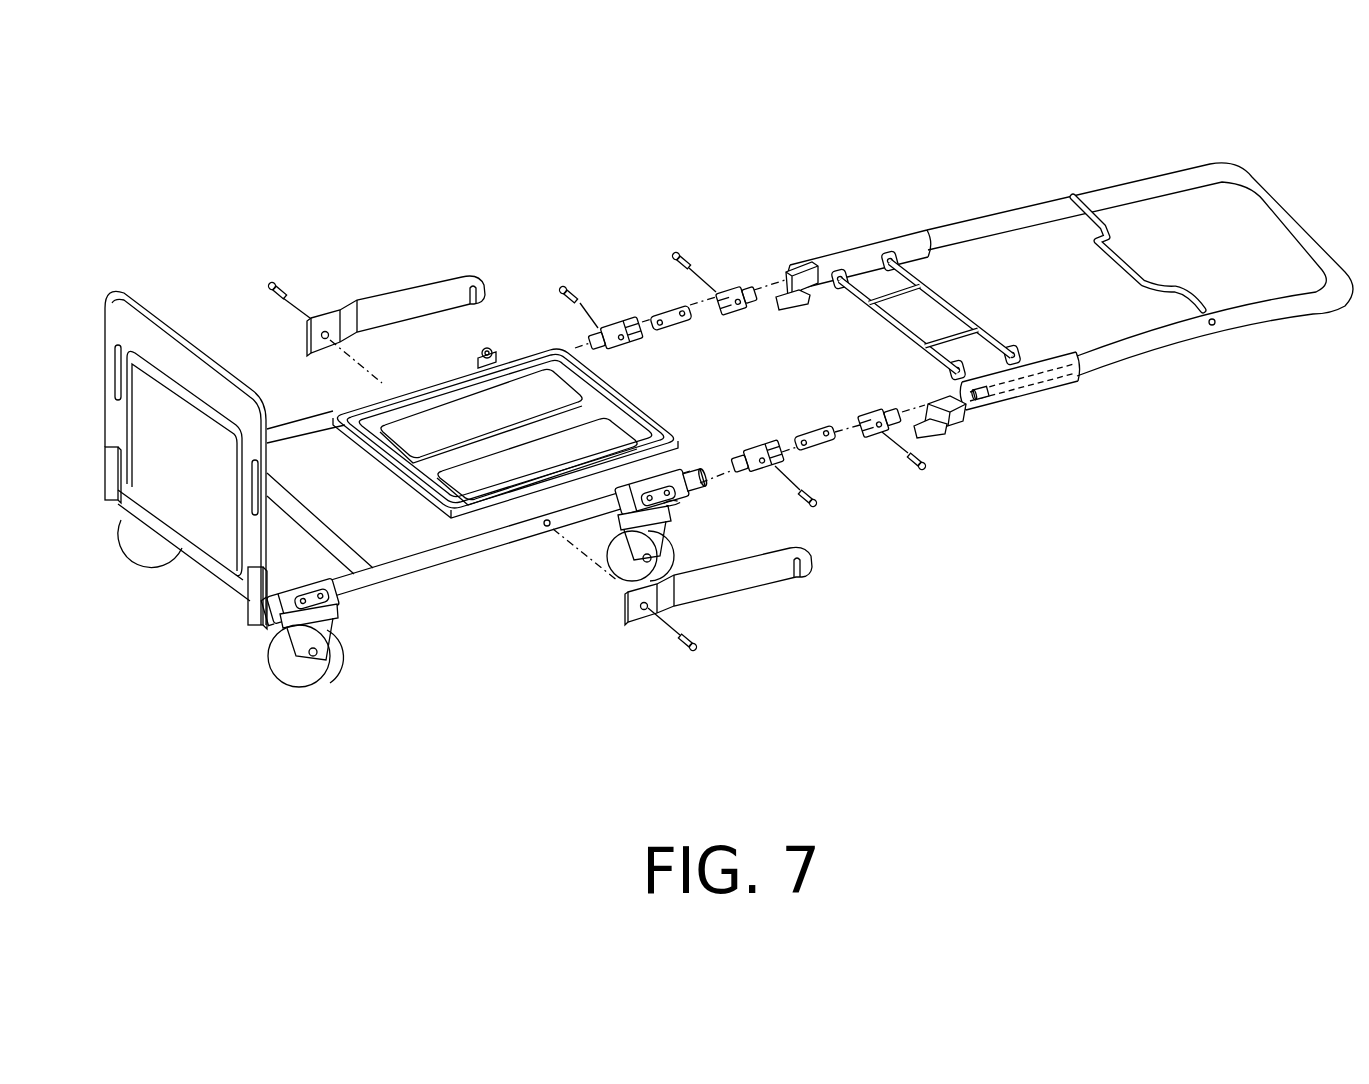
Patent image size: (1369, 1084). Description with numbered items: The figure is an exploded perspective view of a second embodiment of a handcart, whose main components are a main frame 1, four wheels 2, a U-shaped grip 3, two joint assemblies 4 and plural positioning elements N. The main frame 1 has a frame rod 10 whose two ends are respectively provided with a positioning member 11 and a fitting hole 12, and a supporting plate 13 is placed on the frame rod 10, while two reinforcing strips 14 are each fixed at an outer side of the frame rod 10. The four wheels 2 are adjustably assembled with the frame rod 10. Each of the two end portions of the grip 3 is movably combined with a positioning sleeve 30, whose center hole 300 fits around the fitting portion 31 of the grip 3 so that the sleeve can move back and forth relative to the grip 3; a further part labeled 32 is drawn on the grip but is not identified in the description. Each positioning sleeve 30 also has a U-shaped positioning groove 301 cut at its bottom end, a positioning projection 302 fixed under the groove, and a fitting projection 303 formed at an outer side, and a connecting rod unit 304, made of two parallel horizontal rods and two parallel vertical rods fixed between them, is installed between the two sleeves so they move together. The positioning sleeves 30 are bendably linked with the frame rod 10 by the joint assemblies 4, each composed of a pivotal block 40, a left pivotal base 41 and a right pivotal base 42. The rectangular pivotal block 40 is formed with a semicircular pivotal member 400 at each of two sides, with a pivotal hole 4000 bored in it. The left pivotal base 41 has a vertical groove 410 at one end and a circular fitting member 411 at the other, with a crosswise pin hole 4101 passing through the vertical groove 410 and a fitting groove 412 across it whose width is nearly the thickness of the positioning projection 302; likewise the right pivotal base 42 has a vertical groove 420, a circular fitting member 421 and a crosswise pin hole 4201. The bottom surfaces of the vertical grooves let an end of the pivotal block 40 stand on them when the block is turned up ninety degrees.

The main frame 1 is at (432, 576).
The wheels 2 is at (346, 660).
The grip 3 is at (1275, 318).
The joint assemblies 4 is at (947, 563).
The frame rod 10 is at (492, 538).
The positioning member 11 is at (691, 508).
The fitting hole 12 is at (706, 486).
The supporting plate 13 is at (180, 337).
The reinforcing strips 14 is at (736, 590).
The positioning sleeve 30 is at (896, 234).
The center hole 300 is at (786, 272).
The positioning groove 301 is at (792, 266).
The positioning projection 302 is at (802, 306).
The fitting projection 303 is at (980, 398).
The connecting rod unit 304 is at (962, 320).
The fitting portion 31 is at (1012, 382).
The wire hook 32 is at (1125, 262).
The pivotal block 40 is at (816, 426).
The pivotal member 400 is at (802, 440).
The pivotal hole 4000 is at (828, 447).
The left pivotal base 41 is at (614, 348).
The vertical groove 410 is at (610, 322).
The circular fitting member 411 is at (593, 340).
The fitting groove 412 is at (631, 323).
The crosswise pin hole 4101 is at (641, 341).
The right pivotal base 42 is at (950, 502).
The vertical groove 420 is at (866, 416).
The circular fitting member 421 is at (903, 421).
The crosswise pin hole 4201 is at (881, 432).
The positioning elements N is at (574, 287).